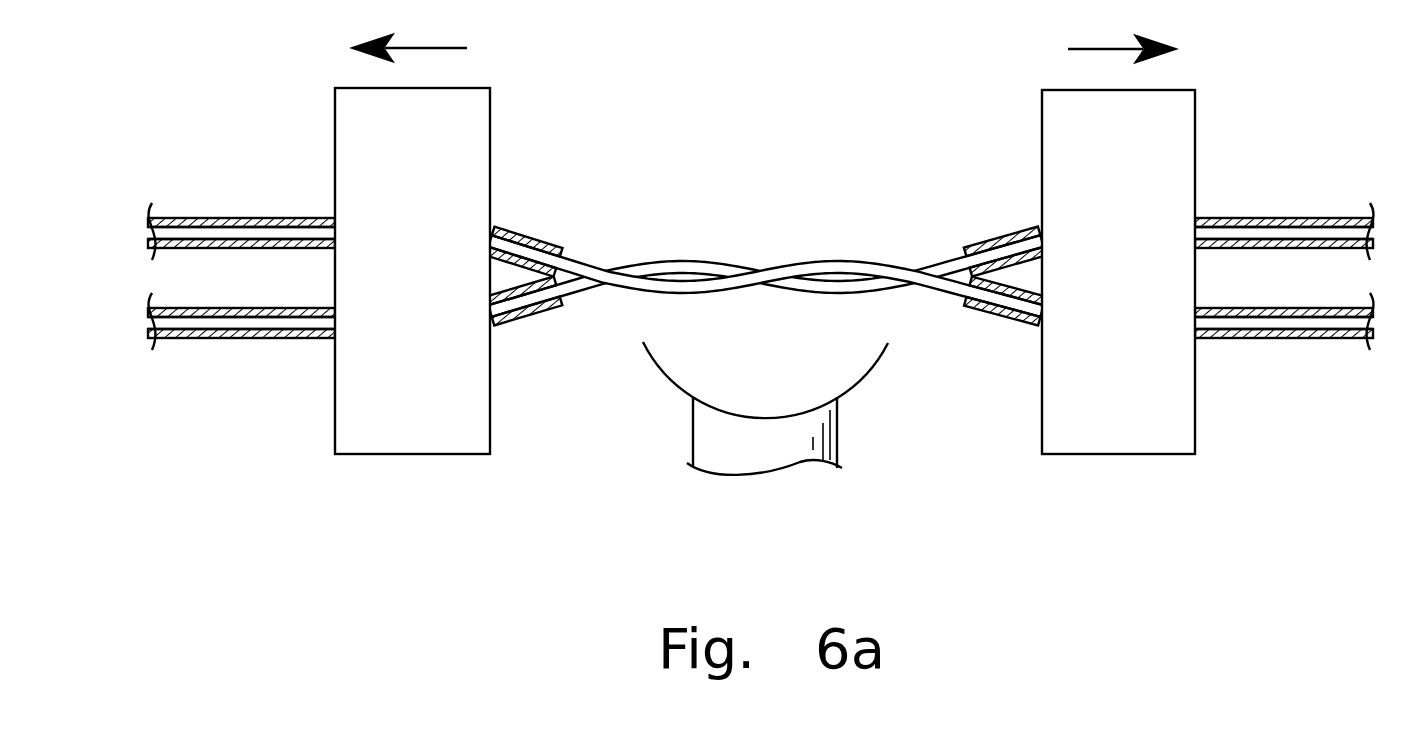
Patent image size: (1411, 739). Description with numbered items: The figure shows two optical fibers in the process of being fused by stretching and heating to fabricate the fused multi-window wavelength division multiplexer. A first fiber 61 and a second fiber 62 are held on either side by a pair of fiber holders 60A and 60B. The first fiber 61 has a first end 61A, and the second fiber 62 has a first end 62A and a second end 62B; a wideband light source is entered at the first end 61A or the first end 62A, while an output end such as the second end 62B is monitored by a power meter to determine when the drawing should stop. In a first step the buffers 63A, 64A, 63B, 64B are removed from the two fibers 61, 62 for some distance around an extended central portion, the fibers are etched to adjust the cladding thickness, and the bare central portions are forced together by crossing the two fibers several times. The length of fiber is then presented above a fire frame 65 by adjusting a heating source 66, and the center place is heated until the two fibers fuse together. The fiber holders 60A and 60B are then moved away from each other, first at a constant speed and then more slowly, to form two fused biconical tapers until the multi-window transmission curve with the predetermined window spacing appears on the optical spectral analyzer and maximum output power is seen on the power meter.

The fiber holder 60A is at (395, 437).
The fiber holder 60B is at (1108, 437).
The first fiber 61 is at (738, 276).
The second fiber 62 is at (738, 276).
The first end of first fiber 61A is at (235, 215).
The first end of second fiber 62A is at (223, 338).
The second end of second fiber 62B is at (1275, 218).
The buffer 63A is at (530, 232).
The buffer 64A is at (533, 317).
The buffer 63B is at (1003, 237).
The buffer 64B is at (1005, 325).
The fire frame 65 is at (675, 358).
The heating source 66 is at (753, 460).